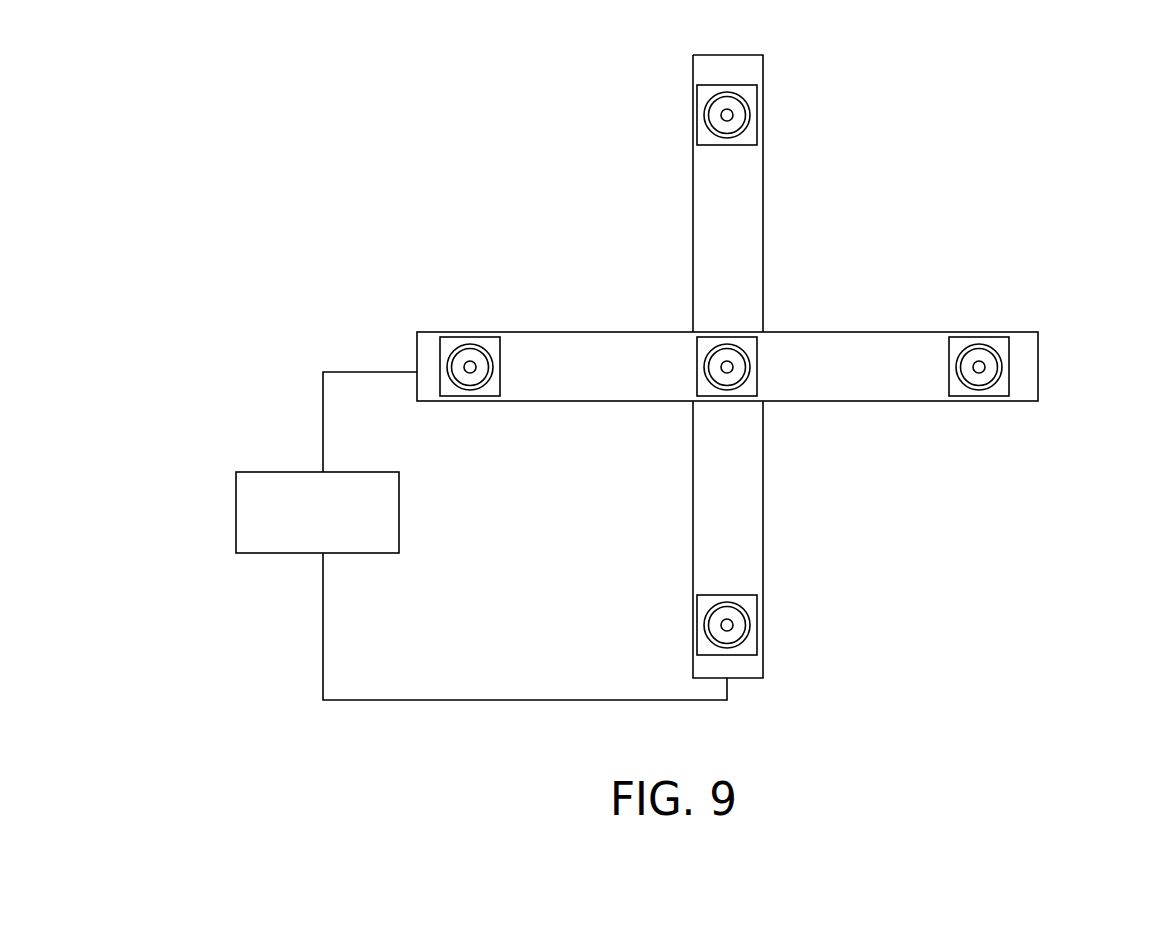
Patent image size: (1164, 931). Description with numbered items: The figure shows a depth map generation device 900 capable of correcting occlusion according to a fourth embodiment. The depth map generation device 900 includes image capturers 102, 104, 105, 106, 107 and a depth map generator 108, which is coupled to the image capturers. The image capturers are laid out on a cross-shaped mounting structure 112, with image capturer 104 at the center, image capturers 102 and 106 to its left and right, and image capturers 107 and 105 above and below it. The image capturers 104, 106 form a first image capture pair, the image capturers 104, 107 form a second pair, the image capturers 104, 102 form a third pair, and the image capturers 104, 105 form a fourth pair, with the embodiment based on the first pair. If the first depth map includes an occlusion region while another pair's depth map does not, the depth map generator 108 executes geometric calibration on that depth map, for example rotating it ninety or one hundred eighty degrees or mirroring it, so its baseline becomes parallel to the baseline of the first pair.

The image capturer 102 is at (470, 396).
The image capturer 104 is at (757, 372).
The image capturer 105 is at (757, 627).
The image capturer 106 is at (1000, 396).
The image capturer 107 is at (757, 107).
The depth map generator 108 is at (236, 502).
The support frame 112 is at (1038, 370).
The depth map generation device 900 is at (1032, 143).